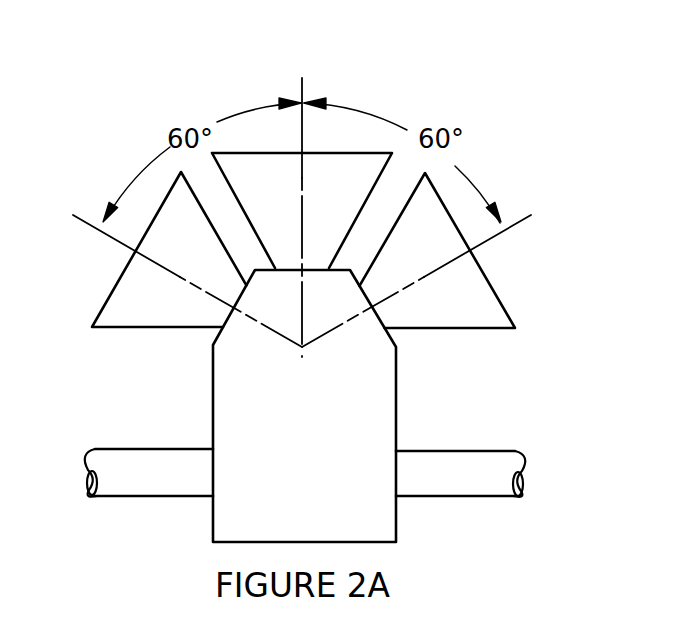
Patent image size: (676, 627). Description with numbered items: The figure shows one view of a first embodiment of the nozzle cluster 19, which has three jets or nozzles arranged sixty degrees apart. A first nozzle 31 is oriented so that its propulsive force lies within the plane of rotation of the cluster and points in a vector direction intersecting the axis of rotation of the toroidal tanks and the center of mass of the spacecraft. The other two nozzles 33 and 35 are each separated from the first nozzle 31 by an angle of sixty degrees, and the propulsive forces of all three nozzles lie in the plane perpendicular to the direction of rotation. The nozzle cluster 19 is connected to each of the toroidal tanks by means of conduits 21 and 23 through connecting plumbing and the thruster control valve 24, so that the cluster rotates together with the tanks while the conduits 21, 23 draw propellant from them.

The nozzle cluster 19 is at (314, 72).
The conduit 21 is at (128, 467).
The conduit 23 is at (460, 463).
The thruster control valve 24 is at (357, 503).
The first nozzle 31 is at (322, 165).
The nozzle 33 is at (130, 298).
The nozzle 35 is at (462, 288).